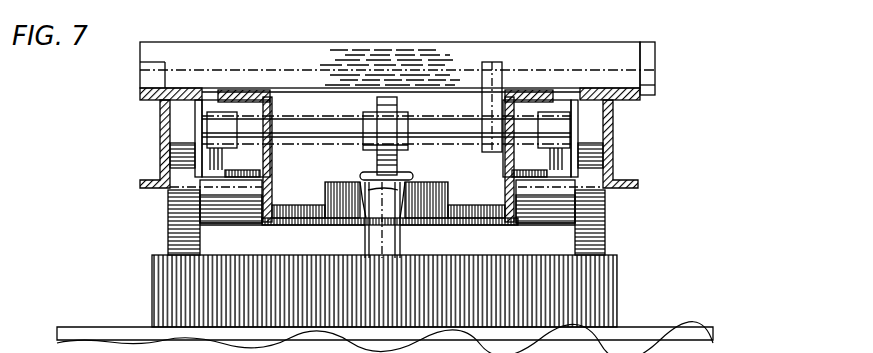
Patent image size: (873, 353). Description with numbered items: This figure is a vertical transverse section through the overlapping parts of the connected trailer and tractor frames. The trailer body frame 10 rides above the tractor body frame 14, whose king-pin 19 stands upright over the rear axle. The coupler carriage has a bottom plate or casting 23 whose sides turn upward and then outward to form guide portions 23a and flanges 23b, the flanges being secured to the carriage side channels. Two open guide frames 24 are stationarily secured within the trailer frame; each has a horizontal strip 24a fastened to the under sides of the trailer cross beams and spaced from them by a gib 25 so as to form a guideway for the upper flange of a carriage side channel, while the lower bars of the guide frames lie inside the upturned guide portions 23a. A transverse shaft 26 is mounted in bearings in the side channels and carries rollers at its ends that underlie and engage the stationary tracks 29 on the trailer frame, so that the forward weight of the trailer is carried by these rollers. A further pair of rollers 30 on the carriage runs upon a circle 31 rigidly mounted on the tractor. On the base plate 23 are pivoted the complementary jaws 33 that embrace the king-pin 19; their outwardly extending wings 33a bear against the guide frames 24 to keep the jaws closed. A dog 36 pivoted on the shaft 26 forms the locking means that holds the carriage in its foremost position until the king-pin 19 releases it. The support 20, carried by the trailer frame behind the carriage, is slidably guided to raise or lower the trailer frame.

The body frame 10 is at (160, 114).
The body frame 14 is at (112, 327).
The king-pin 19 is at (400, 238).
The support 20 is at (207, 158).
The bottom plate or casting 23 is at (300, 226).
The guide portions 23a is at (262, 200).
The flanges 23b is at (258, 188).
The guide frames 24 is at (505, 196).
The horizontal strip 24a is at (270, 88).
The gib 25 is at (238, 90).
The shaft 26 is at (310, 137).
The stationary tracks 29 is at (183, 92).
The rollers 30 is at (168, 240).
The circle 31 is at (605, 298).
The jaws 33 is at (337, 180).
The wings 33a is at (285, 225).
The dog 36 is at (405, 202).